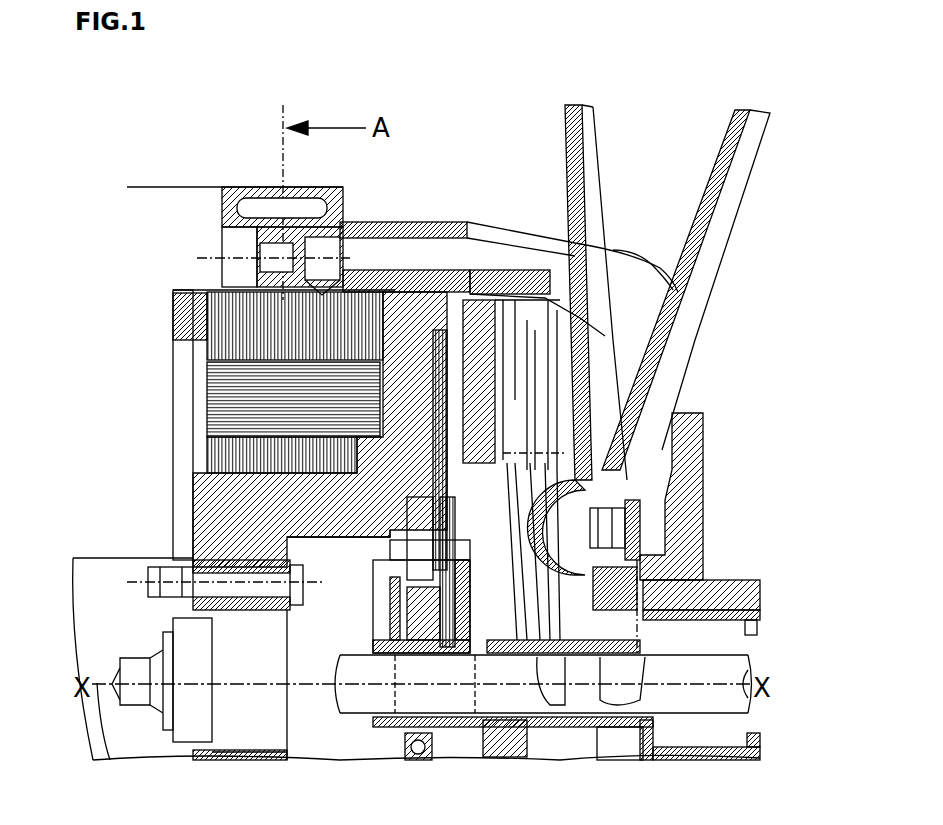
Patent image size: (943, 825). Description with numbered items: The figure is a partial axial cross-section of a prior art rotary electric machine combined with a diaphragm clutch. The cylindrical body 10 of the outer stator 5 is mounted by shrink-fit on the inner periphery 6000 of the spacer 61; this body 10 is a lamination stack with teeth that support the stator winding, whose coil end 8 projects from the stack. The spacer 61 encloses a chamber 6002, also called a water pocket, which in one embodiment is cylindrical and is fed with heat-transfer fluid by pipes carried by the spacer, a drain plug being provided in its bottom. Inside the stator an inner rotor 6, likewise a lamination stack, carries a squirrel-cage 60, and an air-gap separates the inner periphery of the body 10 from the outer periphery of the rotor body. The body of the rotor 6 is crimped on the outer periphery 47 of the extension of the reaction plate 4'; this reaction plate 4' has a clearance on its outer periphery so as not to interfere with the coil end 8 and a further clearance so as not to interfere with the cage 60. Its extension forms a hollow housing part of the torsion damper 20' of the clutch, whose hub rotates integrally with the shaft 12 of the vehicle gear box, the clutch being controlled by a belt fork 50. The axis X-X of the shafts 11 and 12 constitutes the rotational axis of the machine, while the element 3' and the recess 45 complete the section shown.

The spacer 61 is at (232, 182).
The chamber 6002 is at (263, 197).
The inner periphery of spacer 6000 is at (358, 226).
The coil end 8 is at (373, 307).
The cylindrical body 10 is at (207, 300).
The outer stator 5 is at (207, 310).
The squirrel-cage 60 is at (195, 402).
The inner rotor 6 is at (207, 450).
The outer periphery of reaction plate extension 47 is at (197, 467).
The recess 45 is at (305, 565).
The shaft 11 is at (128, 577).
The torsion damper 20' is at (381, 576).
The shaft 12 is at (362, 695).
The reaction plate 4' is at (456, 368).
The rotor 3' is at (515, 317).
The belt fork 50 is at (707, 213).